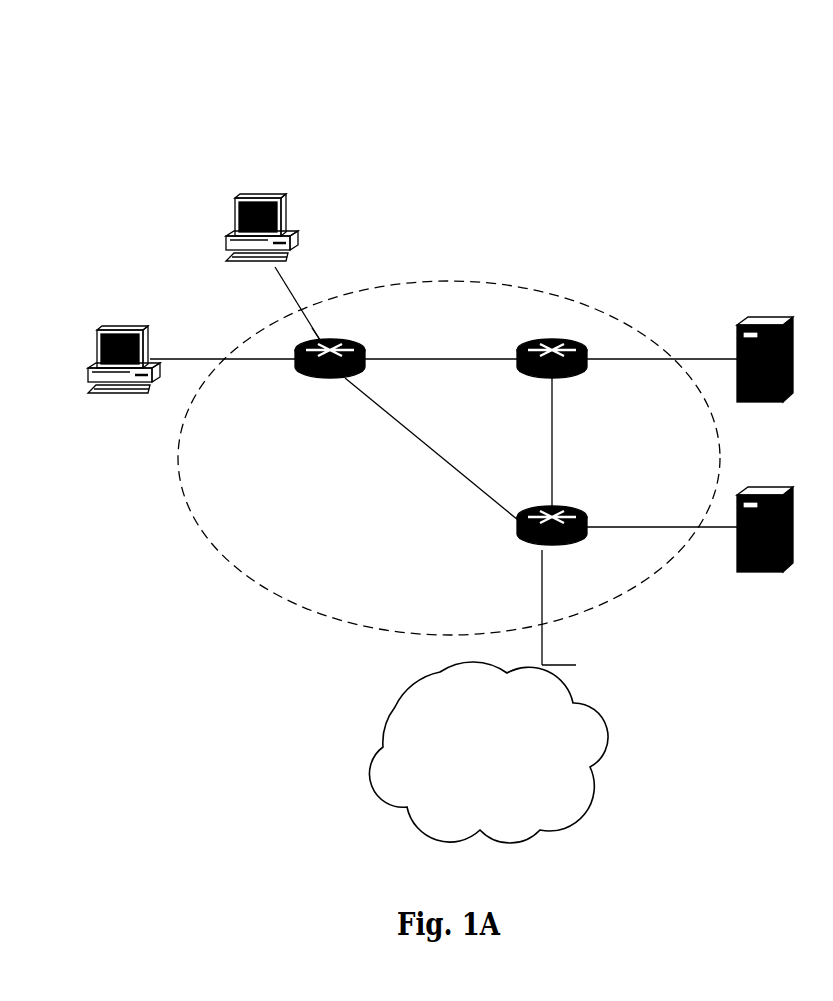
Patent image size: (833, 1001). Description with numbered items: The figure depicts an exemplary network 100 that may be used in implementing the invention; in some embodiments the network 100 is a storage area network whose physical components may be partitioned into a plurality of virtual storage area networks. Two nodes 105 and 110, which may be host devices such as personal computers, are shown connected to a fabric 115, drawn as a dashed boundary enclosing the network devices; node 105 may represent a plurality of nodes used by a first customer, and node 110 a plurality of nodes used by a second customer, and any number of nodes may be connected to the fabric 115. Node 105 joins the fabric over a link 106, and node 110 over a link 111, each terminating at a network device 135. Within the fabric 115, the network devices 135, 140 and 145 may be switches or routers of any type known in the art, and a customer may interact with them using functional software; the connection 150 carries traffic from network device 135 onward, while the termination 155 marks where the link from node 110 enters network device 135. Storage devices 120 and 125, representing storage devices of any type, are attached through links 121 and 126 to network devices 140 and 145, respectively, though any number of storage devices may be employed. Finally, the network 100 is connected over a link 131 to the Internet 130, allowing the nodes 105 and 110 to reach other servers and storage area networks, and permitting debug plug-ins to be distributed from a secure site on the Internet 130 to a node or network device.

The network 100 is at (452, 92).
The node 105 is at (107, 343).
The link from client 105 to router 106 is at (172, 367).
The node 110 is at (236, 242).
The link from client 110 to router 111 is at (275, 270).
The fabric 115 is at (266, 566).
The storage device 120 is at (750, 325).
The link from router to server 120 121 is at (735, 360).
The storage device 125 is at (780, 500).
The link from router to server 125 126 is at (733, 527).
The Internet 130 is at (407, 718).
The link from router to Internet 131 is at (575, 613).
The network device 135 is at (320, 378).
The network device 140 is at (522, 376).
The network device 145 is at (533, 547).
The link between routers / router interface 150 is at (290, 362).
The router interface 155 is at (320, 339).